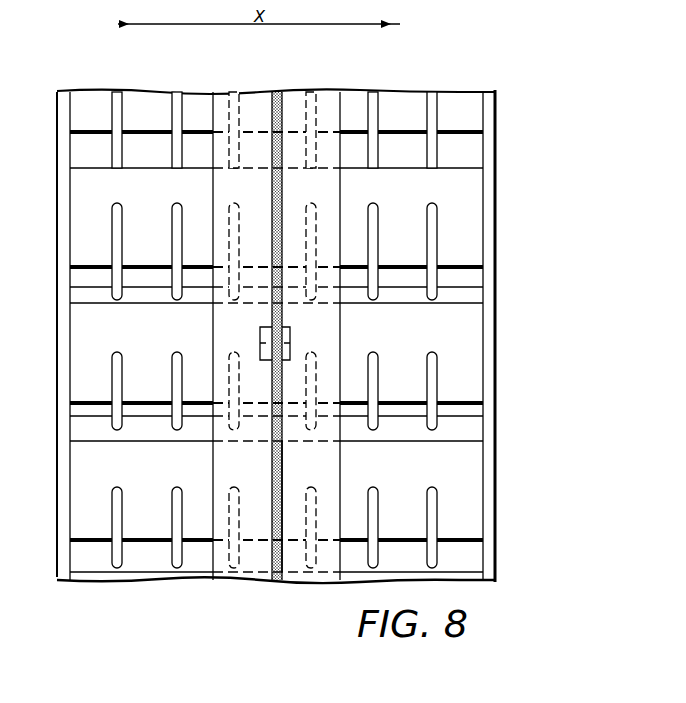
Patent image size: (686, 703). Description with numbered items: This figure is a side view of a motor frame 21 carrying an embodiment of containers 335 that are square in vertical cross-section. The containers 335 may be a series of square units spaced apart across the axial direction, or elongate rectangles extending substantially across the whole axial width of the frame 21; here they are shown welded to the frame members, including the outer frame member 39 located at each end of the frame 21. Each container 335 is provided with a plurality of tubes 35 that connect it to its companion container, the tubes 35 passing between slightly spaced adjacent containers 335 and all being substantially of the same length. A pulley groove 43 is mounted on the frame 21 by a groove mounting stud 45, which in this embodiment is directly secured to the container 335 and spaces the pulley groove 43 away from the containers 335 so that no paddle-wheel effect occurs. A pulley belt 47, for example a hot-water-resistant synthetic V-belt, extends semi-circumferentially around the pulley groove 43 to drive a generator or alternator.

The motor frame 21 is at (46, 89).
The tubes 35 is at (174, 363).
The outer frame member 39 is at (58, 480).
The pulley groove 43 is at (277, 92).
The groove mounting stud 45 is at (287, 343).
The pulley belt 47 is at (283, 497).
The container 335 is at (78, 318).